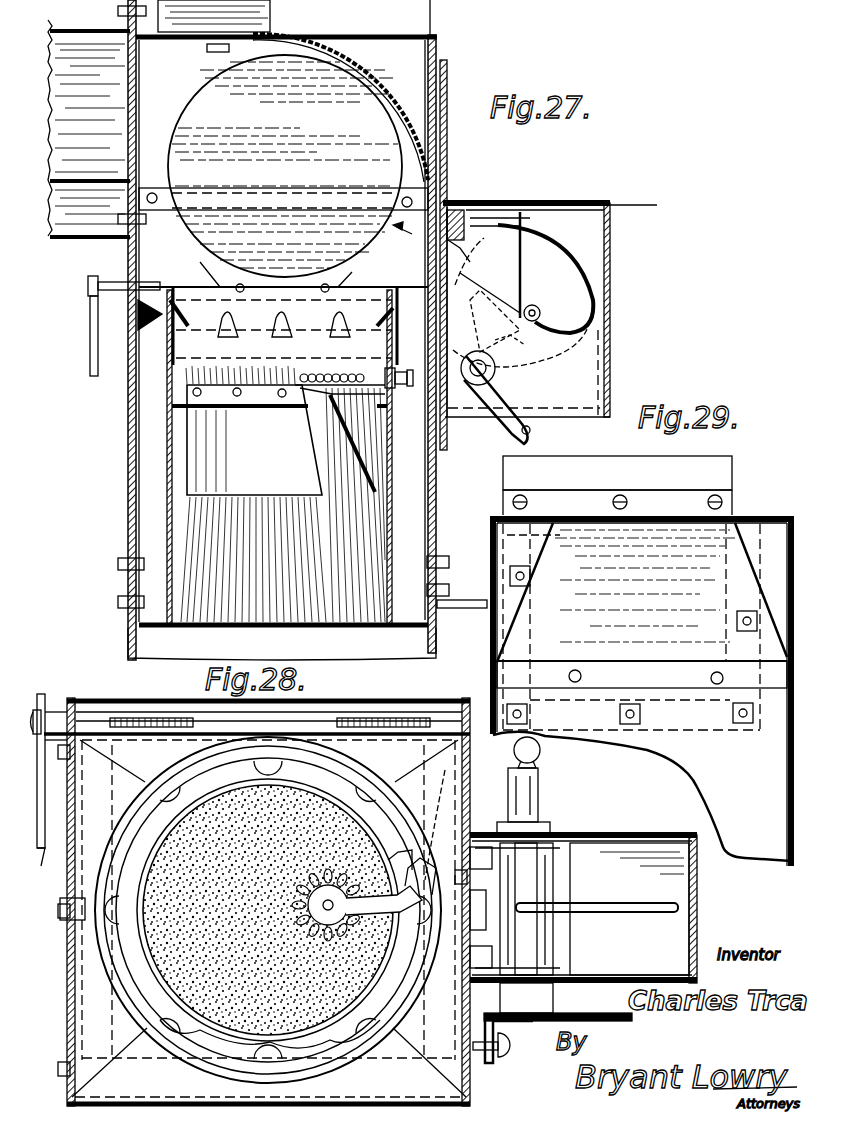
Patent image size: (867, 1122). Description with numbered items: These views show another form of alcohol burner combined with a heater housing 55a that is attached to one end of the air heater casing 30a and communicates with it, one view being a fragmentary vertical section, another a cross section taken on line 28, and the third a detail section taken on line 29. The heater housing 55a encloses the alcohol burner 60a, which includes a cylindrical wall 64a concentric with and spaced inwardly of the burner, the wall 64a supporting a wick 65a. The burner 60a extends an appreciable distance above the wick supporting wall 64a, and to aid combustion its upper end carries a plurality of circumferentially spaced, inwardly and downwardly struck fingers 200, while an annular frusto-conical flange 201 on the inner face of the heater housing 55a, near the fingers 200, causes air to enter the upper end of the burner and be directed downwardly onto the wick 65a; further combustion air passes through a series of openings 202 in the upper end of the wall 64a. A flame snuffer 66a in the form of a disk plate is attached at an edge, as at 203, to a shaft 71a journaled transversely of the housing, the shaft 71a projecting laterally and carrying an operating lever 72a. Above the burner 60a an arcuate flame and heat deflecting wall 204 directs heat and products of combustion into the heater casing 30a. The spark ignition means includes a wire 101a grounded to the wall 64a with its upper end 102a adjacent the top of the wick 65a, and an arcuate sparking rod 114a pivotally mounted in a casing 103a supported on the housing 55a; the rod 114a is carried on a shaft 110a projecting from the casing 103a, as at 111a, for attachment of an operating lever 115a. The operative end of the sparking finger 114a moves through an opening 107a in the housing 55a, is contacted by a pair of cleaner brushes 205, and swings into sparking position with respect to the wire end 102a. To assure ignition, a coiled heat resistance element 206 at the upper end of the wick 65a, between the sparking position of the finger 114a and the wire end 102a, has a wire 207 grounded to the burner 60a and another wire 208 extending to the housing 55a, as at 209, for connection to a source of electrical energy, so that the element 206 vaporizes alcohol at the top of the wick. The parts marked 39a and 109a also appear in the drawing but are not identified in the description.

In FIG. 27, the section line 28 is at (655, 203).
In FIG. 27, the section line 29 is at (400, 8).
In FIG. 27, the heater casing 30a is at (66, 232).
In FIG. 27, the inlet duct 39a is at (135, 116).
In FIG. 27, the heater housing 55a is at (128, 448).
In FIG. 29, the heater housing 55a is at (800, 505).
In FIG. 28, the heater housing 55a is at (268, 902).
In FIG. 27, the alcohol burner 60a is at (166, 482).
In FIG. 27, the cylindrical wall 64a is at (195, 440).
In FIG. 27, the wick 65a is at (195, 522).
In FIG. 28, the wick 65a is at (180, 842).
In FIG. 27, the flame snuffer 66a is at (205, 110).
In FIG. 29, the flame snuffer 66a is at (689, 648).
In FIG. 28, the flame snuffer 66a is at (160, 720).
In FIG. 27, the shaft 71a is at (145, 290).
In FIG. 28, the shaft 71a is at (93, 720).
In FIG. 27, the operating lever 72a is at (92, 350).
In FIG. 28, the operating lever 72a is at (46, 864).
In FIG. 27, the sparking wire 101a is at (358, 440).
In FIG. 27, the upper end of sparking wire 102a is at (295, 390).
In FIG. 28, the casing 103a is at (695, 912).
In FIG. 28, the opening 107a is at (560, 845).
In FIG. 27, the cover plate 109a is at (535, 192).
In FIG. 28, the shaft 110a is at (530, 930).
In FIG. 28, the projecting shaft end 111a is at (540, 1005).
In FIG. 27, the sparking rod 114a is at (592, 263).
In FIG. 28, the sparking rod 114a is at (605, 900).
In FIG. 27, the operating lever 115a is at (518, 396).
In FIG. 28, the operating lever 115a is at (600, 1013).
In FIG. 27, the inwardly struck fingers 200 is at (178, 312).
In FIG. 28, the inwardly struck fingers 200 is at (165, 1038).
In FIG. 27, the frusto-conical flange 201 is at (125, 310).
In FIG. 28, the frusto-conical flange 201 is at (410, 720).
In FIG. 27, the openings 202 is at (283, 397).
In FIG. 27, the edge attachment 203 is at (245, 290).
In FIG. 28, the edge attachment 203 is at (335, 712).
In FIG. 27, the flame and heat deflecting wall 204 is at (392, 92).
In FIG. 27, the cleaner brushes 205 is at (478, 238).
In FIG. 28, the cleaner brushes 205 is at (470, 910).
In FIG. 27, the heat resistance element 206 is at (318, 372).
In FIG. 28, the heat resistance element 206 is at (335, 940).
In FIG. 28, the wire 207 is at (385, 936).
In FIG. 28, the wire 208 is at (396, 858).
In FIG. 28, the connection point 209 is at (450, 760).